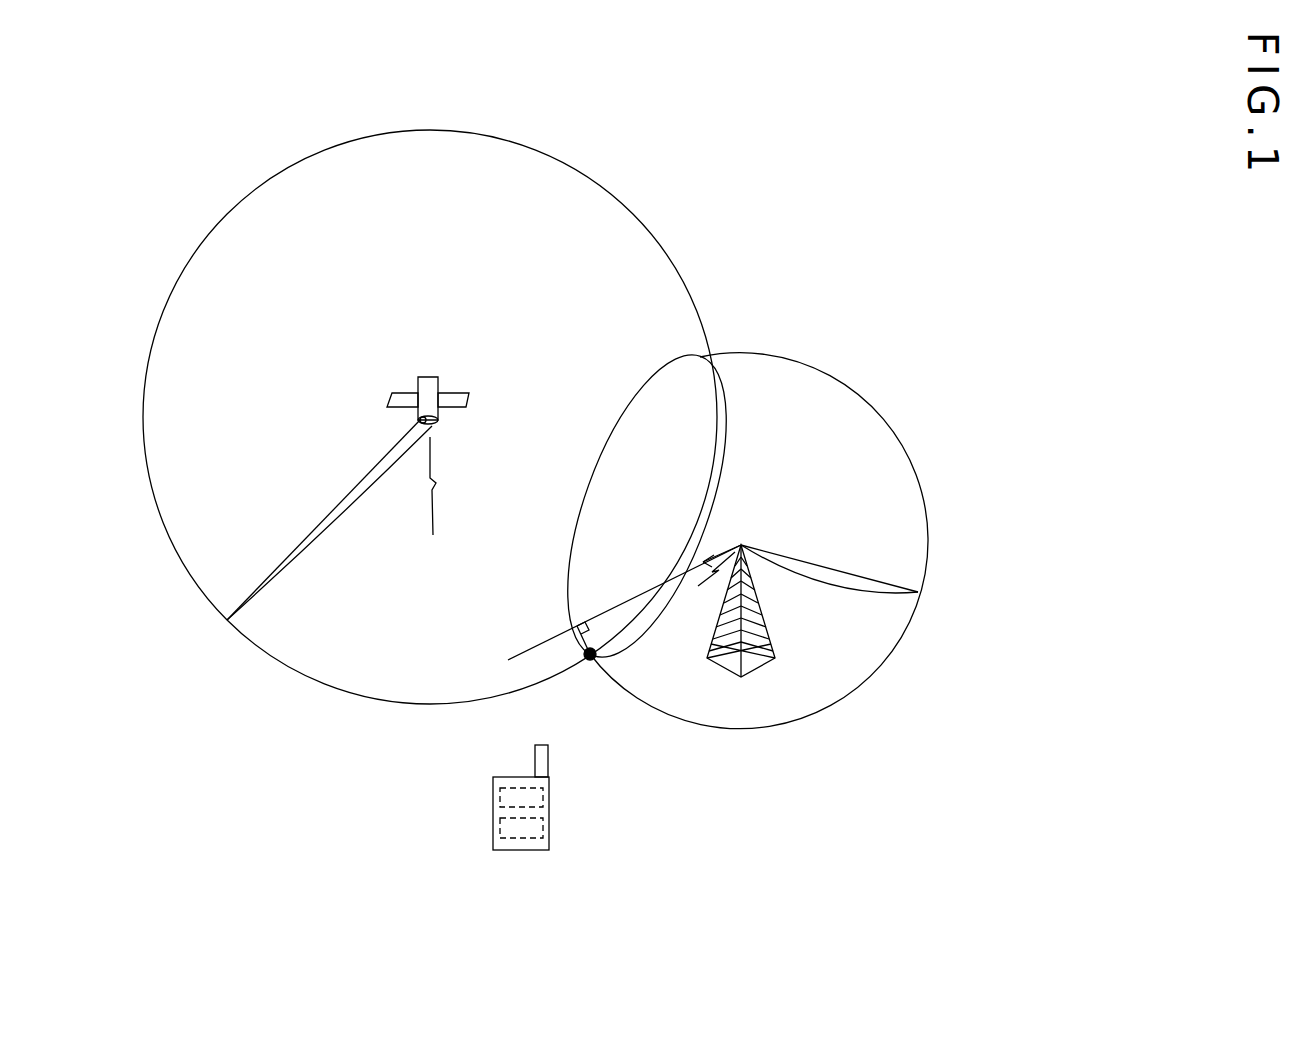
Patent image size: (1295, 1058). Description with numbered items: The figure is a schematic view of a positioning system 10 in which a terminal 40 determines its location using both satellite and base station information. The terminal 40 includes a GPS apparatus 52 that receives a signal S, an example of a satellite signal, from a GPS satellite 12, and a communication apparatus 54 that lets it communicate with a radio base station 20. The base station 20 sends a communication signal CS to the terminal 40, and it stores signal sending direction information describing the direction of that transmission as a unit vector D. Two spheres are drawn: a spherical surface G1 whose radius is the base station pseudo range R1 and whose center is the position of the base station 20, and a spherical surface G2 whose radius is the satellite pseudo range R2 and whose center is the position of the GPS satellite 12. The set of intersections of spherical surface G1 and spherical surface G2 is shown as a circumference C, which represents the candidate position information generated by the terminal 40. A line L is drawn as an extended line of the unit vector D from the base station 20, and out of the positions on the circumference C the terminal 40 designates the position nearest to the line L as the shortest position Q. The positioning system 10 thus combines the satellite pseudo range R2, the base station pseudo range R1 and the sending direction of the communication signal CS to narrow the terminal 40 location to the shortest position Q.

The positioning system 10 is at (893, 99).
The GPS satellite 12 is at (428, 377).
The radio base station 20 is at (741, 677).
The terminal 40 is at (522, 850).
The GPS apparatus 52 is at (500, 797).
The communication apparatus 54 is at (500, 827).
The spherical surface G1 is at (821, 370).
The spherical surface G2 is at (428, 130).
The circumference C is at (682, 357).
The line L is at (532, 646).
The shortest position Q is at (590, 658).
The unit vector D is at (722, 548).
The communication signal CS is at (700, 592).
The base station pseudo range R1 is at (822, 583).
The satellite pseudo range R2 is at (317, 507).
The signal S is at (432, 465).